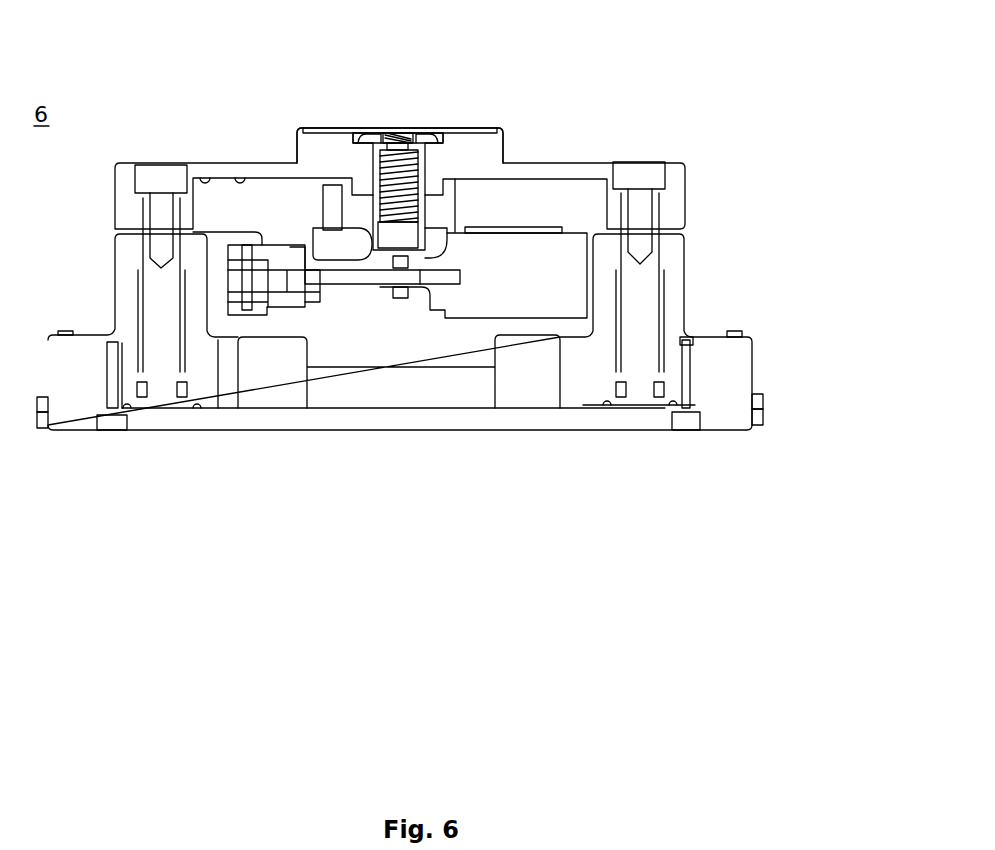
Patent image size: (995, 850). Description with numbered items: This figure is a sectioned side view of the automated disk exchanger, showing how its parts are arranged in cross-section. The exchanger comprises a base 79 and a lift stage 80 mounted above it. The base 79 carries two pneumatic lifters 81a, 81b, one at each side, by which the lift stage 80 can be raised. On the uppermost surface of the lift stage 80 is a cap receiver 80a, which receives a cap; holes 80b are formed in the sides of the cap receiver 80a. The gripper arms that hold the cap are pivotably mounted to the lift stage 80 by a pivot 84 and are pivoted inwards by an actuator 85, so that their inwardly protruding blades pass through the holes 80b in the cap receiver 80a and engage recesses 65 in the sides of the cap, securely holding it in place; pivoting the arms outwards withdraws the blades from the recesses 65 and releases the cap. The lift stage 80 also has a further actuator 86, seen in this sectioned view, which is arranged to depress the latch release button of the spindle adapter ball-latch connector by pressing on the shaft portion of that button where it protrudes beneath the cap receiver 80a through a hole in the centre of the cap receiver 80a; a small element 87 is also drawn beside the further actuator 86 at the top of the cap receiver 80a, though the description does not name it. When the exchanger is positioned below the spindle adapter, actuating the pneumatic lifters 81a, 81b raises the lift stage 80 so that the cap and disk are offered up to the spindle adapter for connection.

The recesses 65 is at (442, 128).
The base 79 is at (755, 359).
The lift stage 80 is at (548, 176).
The cap receiver 80a is at (313, 161).
The holes 80b is at (359, 134).
The pneumatic lifter 81a is at (159, 297).
The pneumatic lifter 81b is at (636, 315).
The pivot 84 is at (247, 279).
The actuator 85 is at (521, 283).
The further actuator 86 is at (393, 186).
The nut / retaining element 87 is at (428, 125).